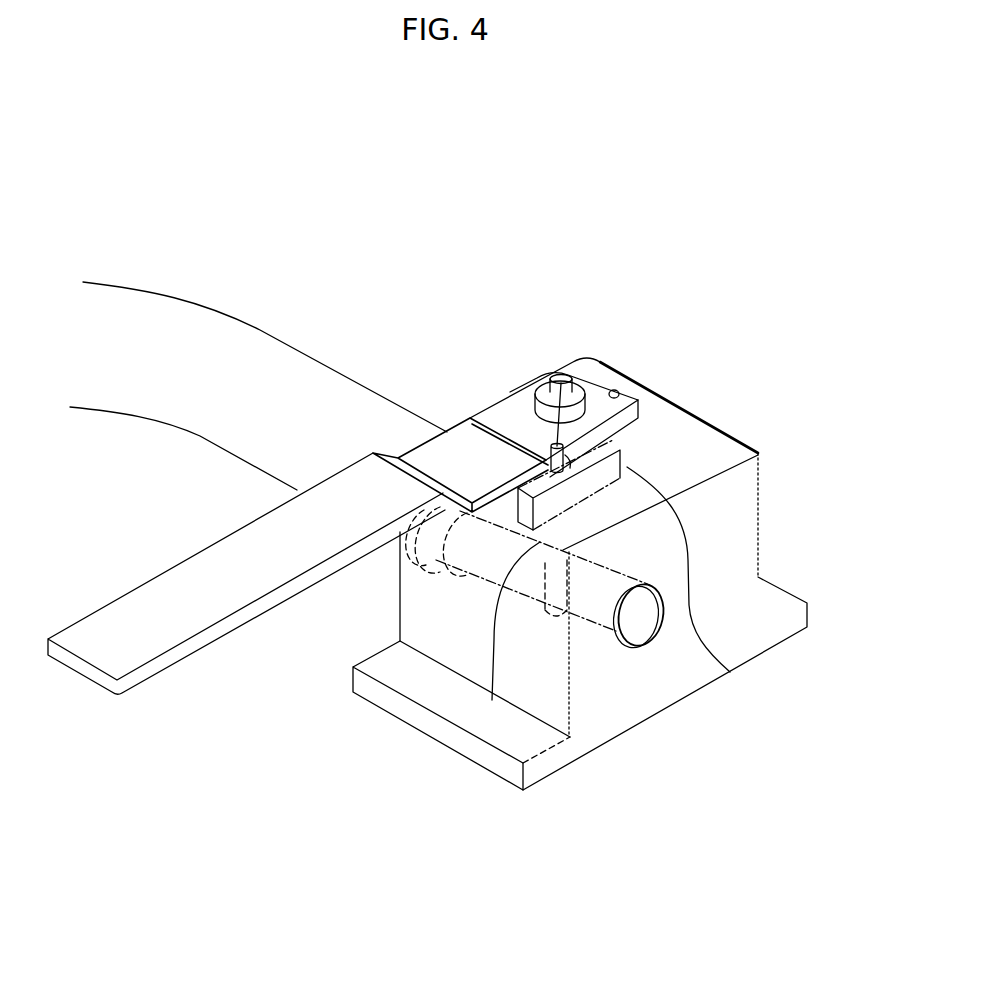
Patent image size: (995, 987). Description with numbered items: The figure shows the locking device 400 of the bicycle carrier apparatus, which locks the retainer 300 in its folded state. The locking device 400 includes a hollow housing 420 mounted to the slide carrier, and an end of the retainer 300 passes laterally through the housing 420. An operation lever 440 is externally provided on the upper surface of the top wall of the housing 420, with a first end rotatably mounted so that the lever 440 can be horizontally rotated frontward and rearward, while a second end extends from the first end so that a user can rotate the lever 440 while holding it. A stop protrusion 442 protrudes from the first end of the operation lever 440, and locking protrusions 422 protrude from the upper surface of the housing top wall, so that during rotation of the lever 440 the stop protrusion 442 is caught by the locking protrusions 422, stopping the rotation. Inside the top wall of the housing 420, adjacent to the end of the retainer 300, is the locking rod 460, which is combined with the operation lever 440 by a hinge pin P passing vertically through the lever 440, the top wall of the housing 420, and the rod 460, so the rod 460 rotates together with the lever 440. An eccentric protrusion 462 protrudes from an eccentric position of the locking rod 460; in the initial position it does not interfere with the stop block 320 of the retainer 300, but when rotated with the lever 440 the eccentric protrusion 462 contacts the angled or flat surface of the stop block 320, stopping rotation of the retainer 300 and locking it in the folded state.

The retainer 300 is at (230, 342).
The stop block 320 is at (492, 700).
The locking device 400 is at (624, 568).
The housing 420 is at (733, 530).
The locking protrusions 422 is at (566, 372).
The operation lever 440 is at (182, 593).
The stop protrusion 442 is at (618, 389).
The locking rod 460 is at (623, 439).
The eccentric protrusion 462 is at (730, 672).
The hinge pin P is at (561, 382).